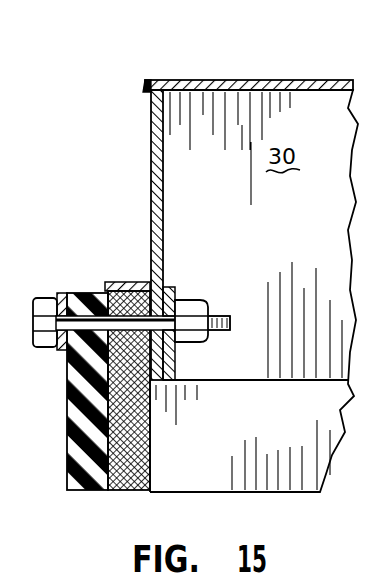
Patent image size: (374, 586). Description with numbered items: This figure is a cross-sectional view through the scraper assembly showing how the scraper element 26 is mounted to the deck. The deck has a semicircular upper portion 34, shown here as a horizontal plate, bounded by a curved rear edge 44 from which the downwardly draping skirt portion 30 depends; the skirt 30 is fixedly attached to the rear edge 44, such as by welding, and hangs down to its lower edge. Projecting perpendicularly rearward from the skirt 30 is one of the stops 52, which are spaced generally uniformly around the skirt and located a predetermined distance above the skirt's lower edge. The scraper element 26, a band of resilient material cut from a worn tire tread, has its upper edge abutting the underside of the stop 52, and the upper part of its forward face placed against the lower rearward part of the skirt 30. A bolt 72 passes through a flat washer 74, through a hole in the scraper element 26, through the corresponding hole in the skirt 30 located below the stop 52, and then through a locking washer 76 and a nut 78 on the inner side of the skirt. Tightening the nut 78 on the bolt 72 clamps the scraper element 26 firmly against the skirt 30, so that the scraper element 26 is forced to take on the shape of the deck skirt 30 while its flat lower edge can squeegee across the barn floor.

The scraper element 26 is at (62, 443).
The skirt portion 30 is at (151, 170).
The upper portion 34 is at (272, 80).
The curved rear edge 44 is at (145, 86).
The stops 52 is at (133, 282).
The bolts 72 is at (37, 298).
The flat washers 74 is at (60, 295).
The locking washers 76 is at (172, 290).
The nuts 78 is at (206, 343).